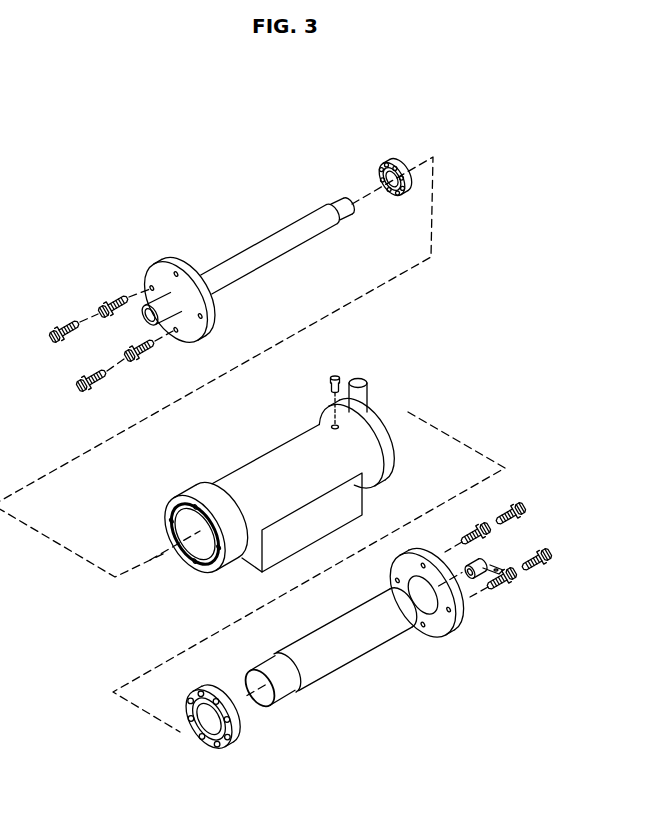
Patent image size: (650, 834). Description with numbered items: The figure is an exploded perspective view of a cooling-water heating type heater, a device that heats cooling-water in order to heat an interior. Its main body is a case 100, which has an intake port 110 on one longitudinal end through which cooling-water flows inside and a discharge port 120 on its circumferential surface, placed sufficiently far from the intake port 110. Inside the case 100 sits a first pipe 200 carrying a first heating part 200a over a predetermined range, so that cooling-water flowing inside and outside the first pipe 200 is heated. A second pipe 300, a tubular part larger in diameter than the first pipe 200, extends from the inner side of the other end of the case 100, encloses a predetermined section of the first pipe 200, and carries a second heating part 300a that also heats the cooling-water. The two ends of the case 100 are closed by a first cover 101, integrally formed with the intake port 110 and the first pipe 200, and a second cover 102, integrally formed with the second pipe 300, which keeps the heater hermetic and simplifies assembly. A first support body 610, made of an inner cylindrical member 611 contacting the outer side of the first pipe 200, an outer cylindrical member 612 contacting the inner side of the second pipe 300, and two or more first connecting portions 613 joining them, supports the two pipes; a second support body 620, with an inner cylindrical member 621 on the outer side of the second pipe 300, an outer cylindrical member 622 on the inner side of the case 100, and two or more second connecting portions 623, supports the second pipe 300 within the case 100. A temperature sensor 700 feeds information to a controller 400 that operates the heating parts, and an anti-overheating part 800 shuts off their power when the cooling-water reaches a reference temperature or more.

The case 100 is at (275, 428).
The first cover 101 is at (198, 340).
The second cover 102 is at (458, 628).
The intake port 110 is at (147, 271).
The discharge port 120 is at (367, 380).
The first pipe 200 is at (342, 177).
The first heating part 200a is at (212, 313).
The second pipe 300 is at (270, 707).
The second heating part 300a is at (410, 634).
The controller 400 is at (242, 573).
The first support body 610 is at (397, 101).
The 1-1 cylindrical member 611 is at (411, 164).
The 1-2 cylindrical member 612 is at (399, 162).
The first connecting portions 613 is at (384, 166).
The second support body 620 is at (118, 729).
The 2-1 cylindrical member 621 is at (228, 743).
The 2-2 cylindrical member 622 is at (207, 716).
The second connecting portions 623 is at (190, 711).
The temperature sensor 700 is at (338, 375).
The anti-overheating part 800 is at (487, 553).